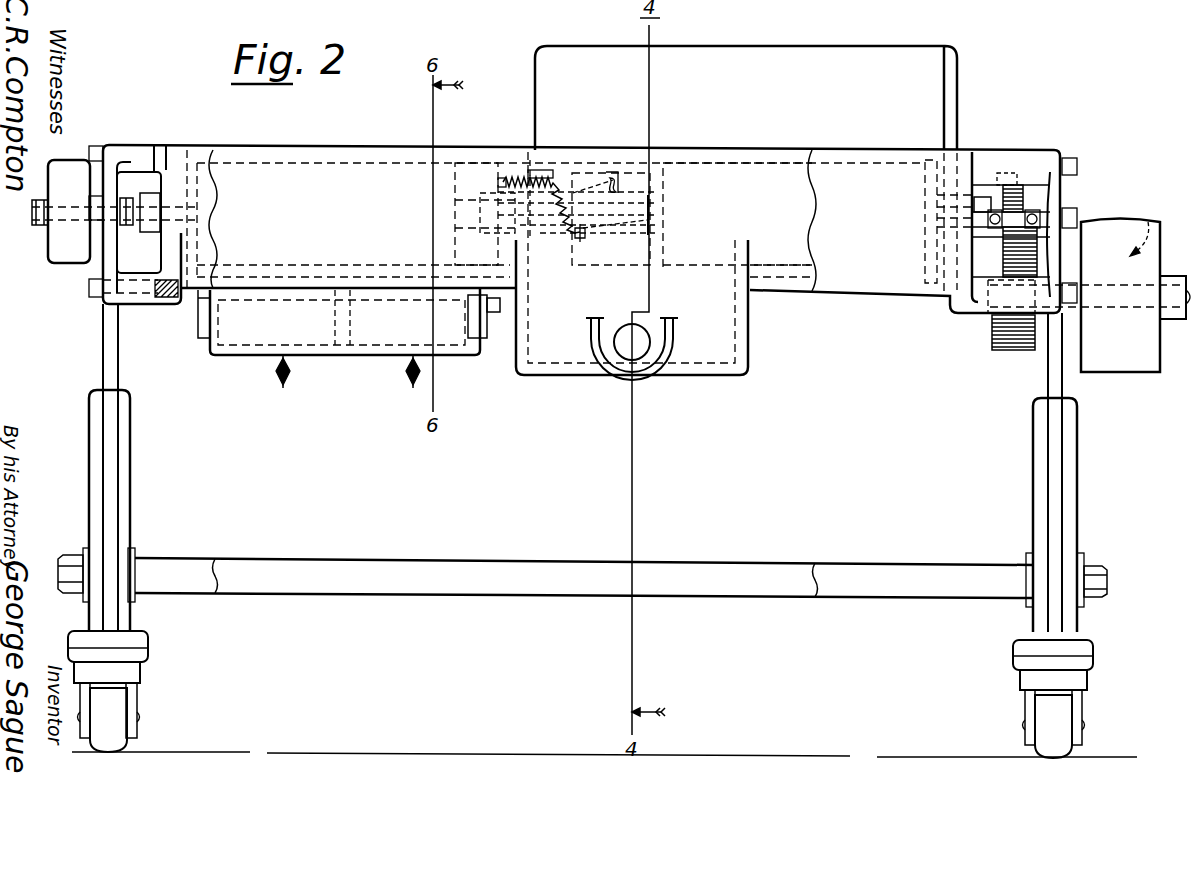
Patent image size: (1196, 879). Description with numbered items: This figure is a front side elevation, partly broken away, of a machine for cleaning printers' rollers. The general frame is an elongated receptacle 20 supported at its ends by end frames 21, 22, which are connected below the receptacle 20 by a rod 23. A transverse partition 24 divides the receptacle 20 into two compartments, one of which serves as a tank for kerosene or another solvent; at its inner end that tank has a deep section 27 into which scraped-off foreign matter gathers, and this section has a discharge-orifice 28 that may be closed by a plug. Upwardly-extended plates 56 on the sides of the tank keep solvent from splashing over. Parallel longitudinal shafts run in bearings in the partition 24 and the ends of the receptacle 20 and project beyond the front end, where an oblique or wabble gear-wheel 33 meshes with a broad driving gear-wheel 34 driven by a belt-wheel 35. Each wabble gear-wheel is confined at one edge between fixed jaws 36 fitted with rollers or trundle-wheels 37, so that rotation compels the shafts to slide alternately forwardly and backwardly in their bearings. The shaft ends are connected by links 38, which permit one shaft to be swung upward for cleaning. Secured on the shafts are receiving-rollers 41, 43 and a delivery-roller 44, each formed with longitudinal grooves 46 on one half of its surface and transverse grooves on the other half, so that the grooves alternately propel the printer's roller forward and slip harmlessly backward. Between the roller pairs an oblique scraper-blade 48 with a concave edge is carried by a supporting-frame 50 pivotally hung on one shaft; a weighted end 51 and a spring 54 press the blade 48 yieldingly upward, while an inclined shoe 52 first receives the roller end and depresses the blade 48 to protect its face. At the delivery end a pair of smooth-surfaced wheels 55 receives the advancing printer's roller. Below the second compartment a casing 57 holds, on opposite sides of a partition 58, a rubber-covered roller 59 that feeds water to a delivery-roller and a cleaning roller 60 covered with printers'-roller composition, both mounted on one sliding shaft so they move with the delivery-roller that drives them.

The receptacle 20 is at (341, 147).
The end frame 21 is at (1040, 446).
The end frame 22 is at (132, 426).
The rod 23 is at (690, 578).
The transverse partition 24 is at (527, 262).
The deep section 27 is at (745, 345).
The discharge-orifice 28 is at (626, 350).
The oblique or wabble gear-wheel 33 is at (1024, 193).
The driving gear-wheel 34 is at (993, 340).
The belt-wheel 35 is at (1090, 296).
The fixed jaws 36 is at (1046, 213).
The rollers or trundle-wheels 37 is at (1000, 221).
The links 38 is at (152, 232).
The receiving-roller 41 is at (930, 175).
The receiving-roller 43 is at (686, 264).
The delivery-roller 44 is at (456, 170).
The longitudinal grooves 46 is at (470, 178).
The oblique scraper-blade 48 is at (612, 172).
The supporting-frame 50 is at (630, 192).
The weighted end 51 is at (603, 275).
The inclined shoe 52 is at (548, 180).
The spring 54 is at (536, 225).
The smooth-surfaced wheels 55 is at (113, 211).
The upwardly-extended plates 56 is at (746, 98).
The casing 57 is at (340, 333).
The partition 58 is at (352, 348).
The rubber-covered roller 59 is at (262, 340).
The cleaning roller 60 is at (445, 345).